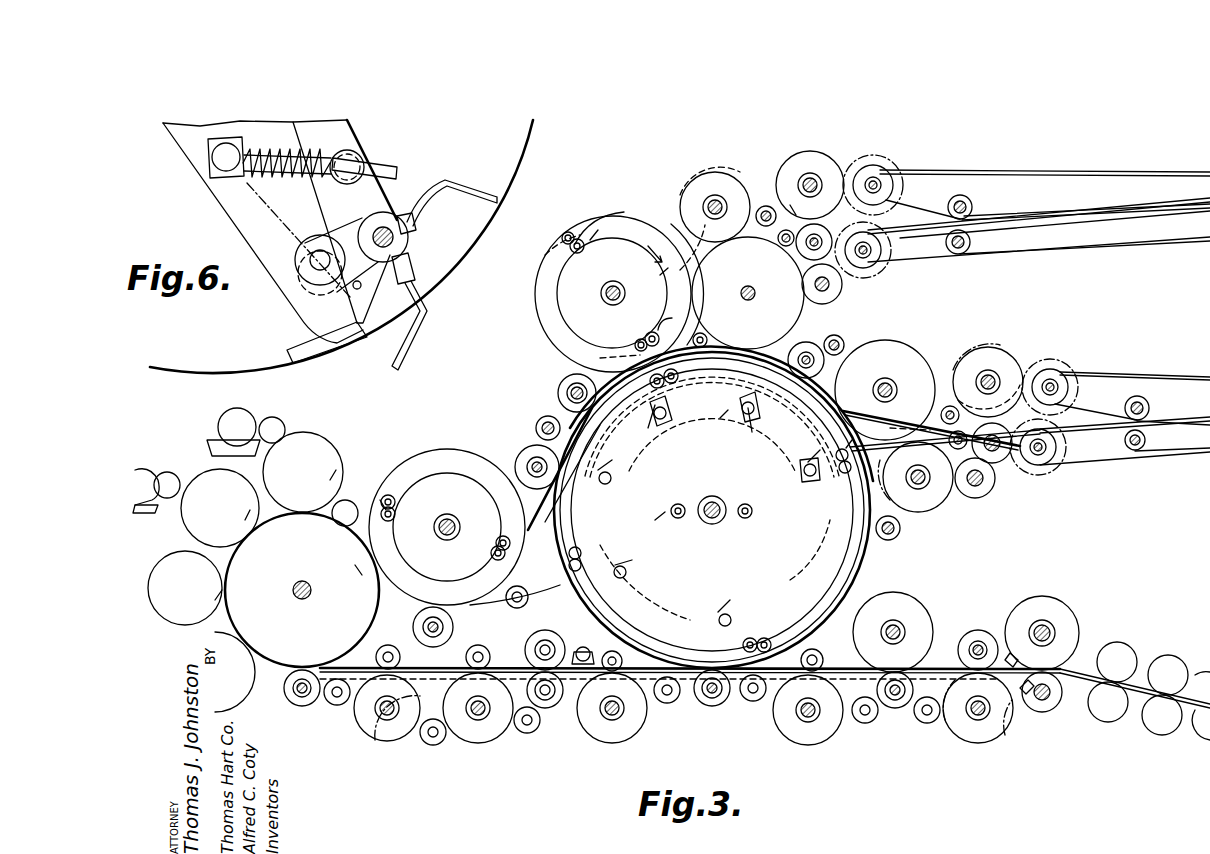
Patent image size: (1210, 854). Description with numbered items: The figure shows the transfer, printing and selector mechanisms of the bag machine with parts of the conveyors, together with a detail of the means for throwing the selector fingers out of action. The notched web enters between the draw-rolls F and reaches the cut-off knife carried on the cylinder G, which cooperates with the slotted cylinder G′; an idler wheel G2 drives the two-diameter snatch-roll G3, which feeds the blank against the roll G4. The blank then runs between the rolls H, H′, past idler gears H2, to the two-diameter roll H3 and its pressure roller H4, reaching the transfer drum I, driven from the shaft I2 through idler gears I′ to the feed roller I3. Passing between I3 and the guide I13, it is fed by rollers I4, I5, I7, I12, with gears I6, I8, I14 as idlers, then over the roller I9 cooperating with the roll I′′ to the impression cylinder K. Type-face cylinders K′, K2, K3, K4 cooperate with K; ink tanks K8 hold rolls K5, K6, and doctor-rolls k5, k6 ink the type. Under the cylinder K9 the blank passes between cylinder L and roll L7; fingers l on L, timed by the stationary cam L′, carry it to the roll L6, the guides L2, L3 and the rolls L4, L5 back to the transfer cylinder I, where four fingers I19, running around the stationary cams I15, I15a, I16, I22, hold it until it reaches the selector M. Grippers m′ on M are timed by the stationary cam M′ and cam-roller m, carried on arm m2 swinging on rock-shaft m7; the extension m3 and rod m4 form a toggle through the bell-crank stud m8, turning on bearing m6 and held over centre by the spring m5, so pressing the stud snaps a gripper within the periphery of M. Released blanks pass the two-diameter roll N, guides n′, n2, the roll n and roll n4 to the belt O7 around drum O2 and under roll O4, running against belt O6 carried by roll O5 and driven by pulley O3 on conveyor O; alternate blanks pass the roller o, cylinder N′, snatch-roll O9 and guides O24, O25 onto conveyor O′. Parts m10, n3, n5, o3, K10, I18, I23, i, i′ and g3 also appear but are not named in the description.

In FIG. 6, the selector M is at (533, 150).
In FIG. 3, the selector M is at (590, 216).
In FIG. 3, the stationary cam M′ is at (557, 302).
In FIG. 3, the cam-roller m is at (566, 232).
In FIG. 6, the gripper m′ is at (480, 178).
In FIG. 3, the gripper m′ is at (577, 299).
In FIG. 3, the arm m2 is at (629, 259).
In FIG. 6, the extension m3 is at (348, 212).
In FIG. 6, the rod m4 is at (382, 165).
In FIG. 6, the spring m5 is at (272, 152).
In FIG. 6, the bearing m6 is at (208, 160).
In FIG. 6, the rock-shaft m7 is at (424, 207).
In FIG. 3, the rock-shaft m7 is at (585, 250).
In FIG. 6, the bell-crank stud m8 is at (353, 151).
In FIG. 3, the roller m10 is at (708, 338).
In FIG. 3, the roll N is at (748, 172).
In FIG. 3, the cylinder N′ is at (930, 365).
In FIG. 3, the roll n is at (811, 151).
In FIG. 3, the guide n′ is at (677, 238).
In FIG. 3, the guide n2 is at (790, 200).
In FIG. 3, the roller n3 is at (748, 293).
In FIG. 3, the roll n4 is at (805, 255).
In FIG. 3, the roller n5 is at (843, 293).
In FIG. 3, the roller o is at (810, 342).
In FIG. 3, the conveyor O is at (982, 165).
In FIG. 3, the conveyor O′ is at (846, 345).
In FIG. 3, the drum O2 is at (893, 185).
In FIG. 3, the pulley O3 is at (881, 250).
In FIG. 3, the guide o3 is at (888, 216).
In FIG. 3, the roll O4 is at (972, 203).
In FIG. 3, the roll O5 is at (970, 242).
In FIG. 3, the belt O6 is at (958, 268).
In FIG. 3, the belt O7 is at (1035, 165).
In FIG. 3, the snatch-roll O9 is at (914, 491).
In FIG. 3, the guide O24 is at (938, 418).
In FIG. 3, the guide O25 is at (982, 498).
In FIG. 3, the cylinder L is at (446, 448).
In FIG. 3, the stationary cam L′ is at (458, 470).
In FIG. 3, the finger l is at (375, 495).
In FIG. 3, the guide L2 is at (485, 600).
In FIG. 3, the guide L3 is at (515, 465).
In FIG. 3, the roll L4 is at (536, 428).
In FIG. 3, the roll L5 is at (558, 391).
In FIG. 3, the roll L6 is at (526, 602).
In FIG. 3, the roll L7 is at (433, 607).
In FIG. 3, the printer's impression cylinder K is at (302, 590).
In FIG. 3, the type-face cylinder K′ is at (230, 680).
In FIG. 3, the type-face cylinder K2 is at (185, 588).
In FIG. 3, the type-face cylinder K3 is at (220, 508).
In FIG. 3, the type-face cylinder K4 is at (303, 472).
In FIG. 3, the ink roll K5 is at (240, 408).
In FIG. 3, the doctor-roll k5 is at (278, 418).
In FIG. 3, the ink roll K6 is at (142, 470).
In FIG. 3, the doctor-roll k6 is at (168, 472).
In FIG. 3, the ink tank K8 is at (205, 440).
In FIG. 3, the cylinder K9 is at (340, 522).
In FIG. 3, the roller K10 is at (292, 704).
In FIG. 3, the transfer drum I is at (740, 440).
In FIG. 3, the idler gear I′ is at (668, 704).
In FIG. 3, the roll I′′ is at (392, 645).
In FIG. 3, the shaft I2 is at (708, 706).
In FIG. 3, the feed roller I3 is at (610, 745).
In FIG. 3, the roller I4 is at (575, 640).
In FIG. 3, the roller I5 is at (560, 700).
In FIG. 3, the idler gear I6 is at (525, 733).
In FIG. 3, the roller I7 is at (486, 743).
In FIG. 3, the idler gear I8 is at (433, 745).
In FIG. 3, the roller I9 is at (365, 718).
In FIG. 3, the roller I12 is at (484, 648).
In FIG. 3, the guide I13 is at (598, 698).
In FIG. 3, the idler gear I14 is at (333, 705).
In FIG. 3, the stationary cam I15 is at (726, 376).
In FIG. 3, the stationary cam I15a is at (792, 418).
In FIG. 3, the cam I16 is at (670, 640).
In FIG. 3, the shaft I18 is at (745, 500).
In FIG. 3, the finger I19 is at (718, 355).
In FIG. 3, the stationary cam I22 is at (635, 605).
In FIG. 3, the shaft I23 is at (672, 508).
In FIG. 3, the gripper i is at (709, 509).
In FIG. 3, the gripper arm i′ is at (709, 508).
In FIG. 3, the roll H is at (930, 610).
In FIG. 3, the roll H′ is at (895, 708).
In FIG. 3, the idler gear H2 is at (868, 724).
In FIG. 3, the roll H3 is at (822, 740).
In FIG. 3, the pressure roller H4 is at (822, 648).
In FIG. 3, the cylinder G is at (1062, 605).
In FIG. 3, the cylinder G′ is at (1058, 705).
In FIG. 3, the idler wheel G2 is at (1020, 735).
In FIG. 3, the snatch-roll G3 is at (978, 743).
In FIG. 3, the roll G4 is at (972, 630).
In FIG. 3, the stop g3 is at (1015, 652).
In FIG. 3, the draw-rolls F is at (1125, 655).